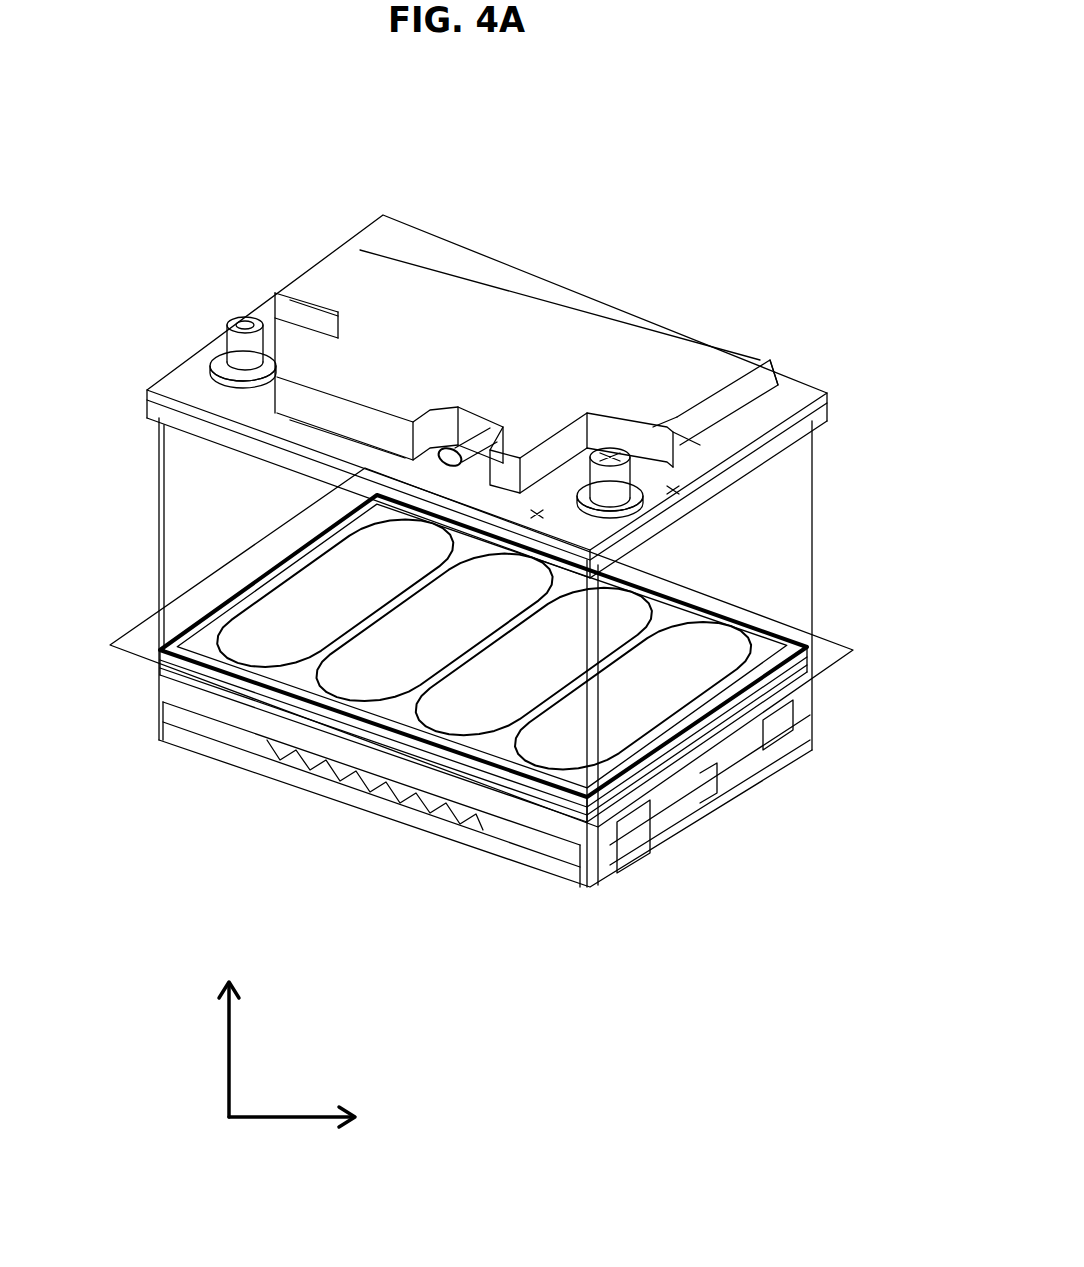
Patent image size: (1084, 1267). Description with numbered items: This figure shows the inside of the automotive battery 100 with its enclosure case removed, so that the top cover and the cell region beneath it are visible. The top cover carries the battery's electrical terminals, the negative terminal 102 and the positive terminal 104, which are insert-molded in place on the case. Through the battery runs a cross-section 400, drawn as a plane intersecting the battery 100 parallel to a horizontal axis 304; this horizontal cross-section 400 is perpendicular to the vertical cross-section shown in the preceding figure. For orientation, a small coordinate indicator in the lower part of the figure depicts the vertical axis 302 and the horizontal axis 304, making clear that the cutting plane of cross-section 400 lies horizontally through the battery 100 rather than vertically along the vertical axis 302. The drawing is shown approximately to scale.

The automotive battery 100 is at (487, 551).
The negative terminal 102 is at (613, 448).
The positive terminal 104 is at (230, 325).
The cross-section 400 is at (844, 636).
The vertical axis 302 is at (226, 1028).
The horizontal axis 304 is at (270, 1111).